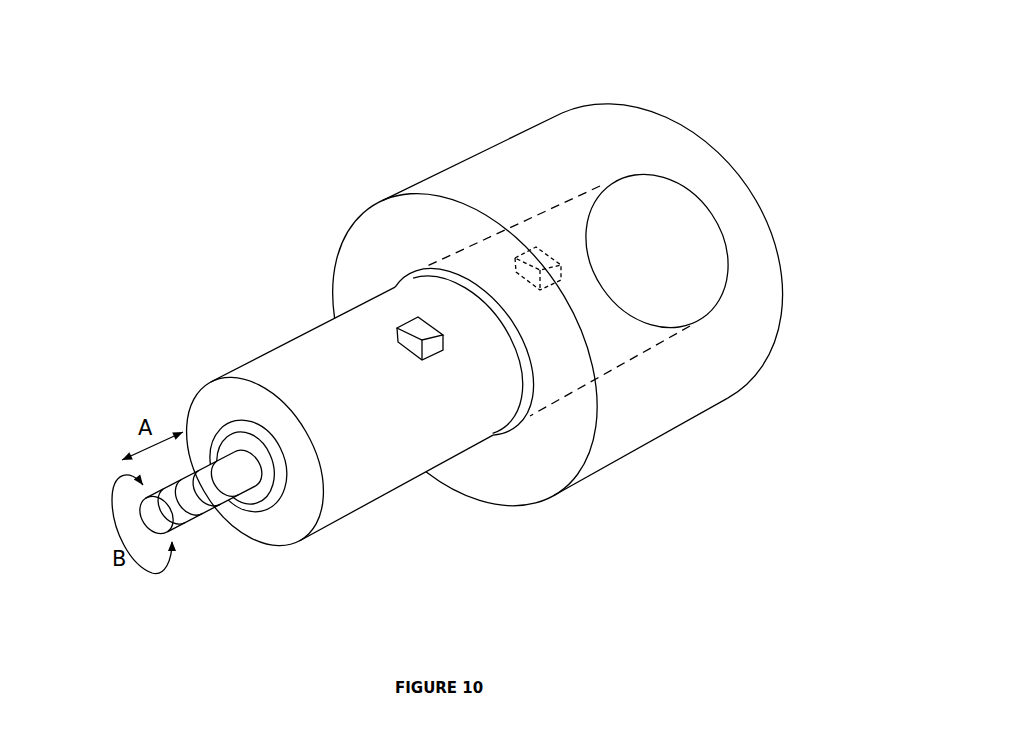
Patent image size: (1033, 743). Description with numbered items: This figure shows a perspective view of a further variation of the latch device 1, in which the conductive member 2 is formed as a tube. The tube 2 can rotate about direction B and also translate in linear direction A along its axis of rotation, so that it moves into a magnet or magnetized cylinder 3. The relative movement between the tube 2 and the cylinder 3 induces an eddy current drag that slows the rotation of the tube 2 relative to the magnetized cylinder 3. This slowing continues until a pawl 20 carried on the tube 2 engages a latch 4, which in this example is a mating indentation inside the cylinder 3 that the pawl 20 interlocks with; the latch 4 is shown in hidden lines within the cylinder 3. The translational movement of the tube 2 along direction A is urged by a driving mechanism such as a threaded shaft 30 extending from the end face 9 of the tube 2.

The latch device 1 is at (454, 349).
The conductive member 2 is at (262, 358).
The magnetized cylinder 3 is at (626, 445).
The latch 4 is at (528, 249).
The end face 9 is at (205, 409).
The pawl 20 is at (405, 318).
The threaded shaft 30 is at (200, 516).